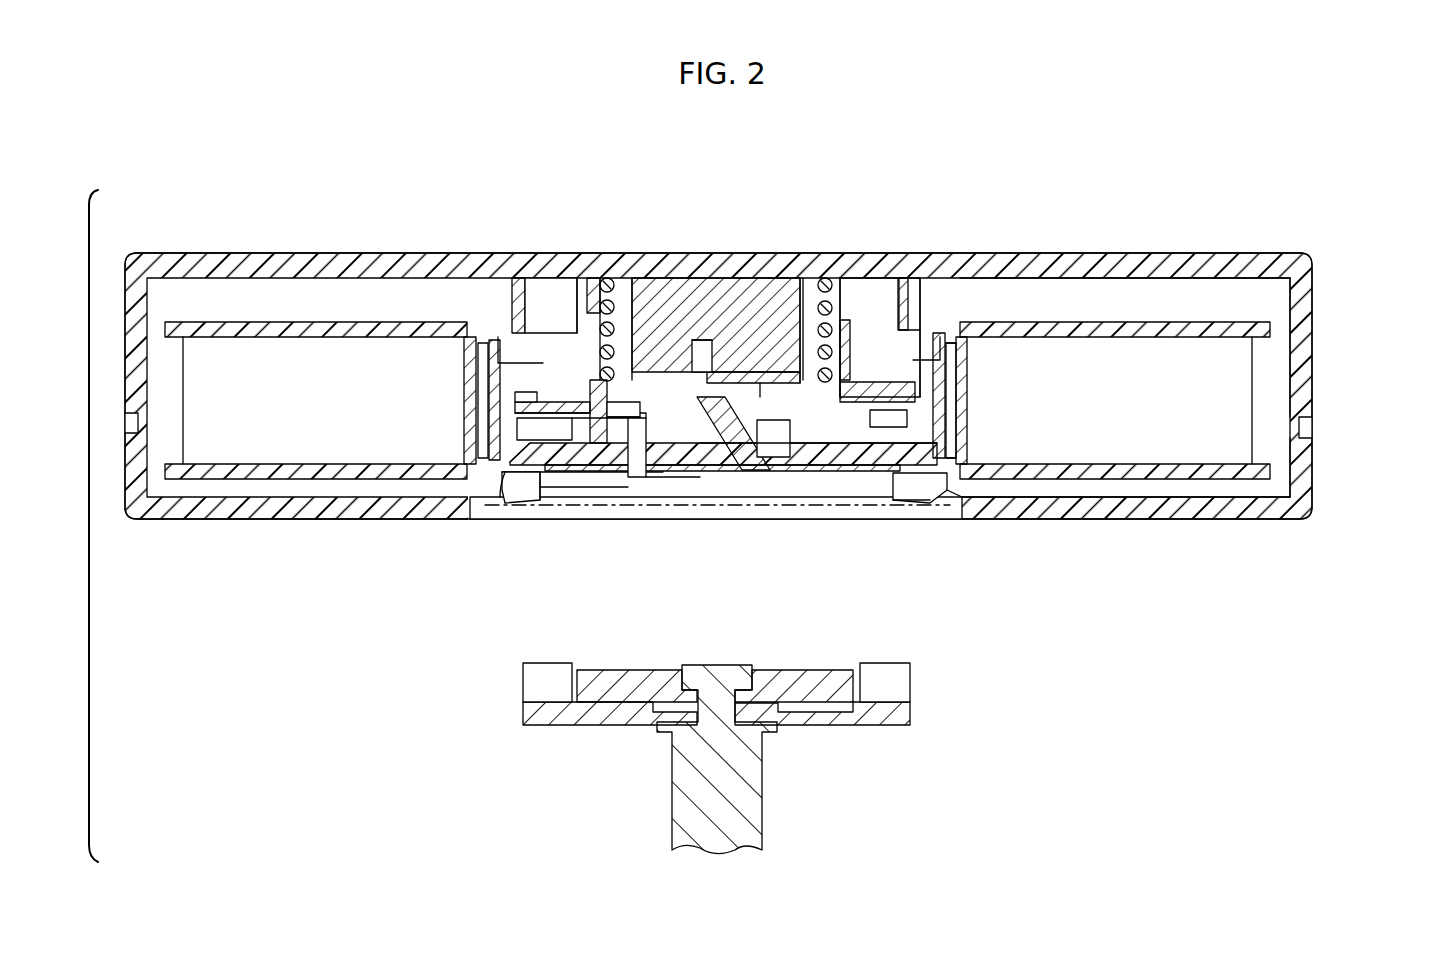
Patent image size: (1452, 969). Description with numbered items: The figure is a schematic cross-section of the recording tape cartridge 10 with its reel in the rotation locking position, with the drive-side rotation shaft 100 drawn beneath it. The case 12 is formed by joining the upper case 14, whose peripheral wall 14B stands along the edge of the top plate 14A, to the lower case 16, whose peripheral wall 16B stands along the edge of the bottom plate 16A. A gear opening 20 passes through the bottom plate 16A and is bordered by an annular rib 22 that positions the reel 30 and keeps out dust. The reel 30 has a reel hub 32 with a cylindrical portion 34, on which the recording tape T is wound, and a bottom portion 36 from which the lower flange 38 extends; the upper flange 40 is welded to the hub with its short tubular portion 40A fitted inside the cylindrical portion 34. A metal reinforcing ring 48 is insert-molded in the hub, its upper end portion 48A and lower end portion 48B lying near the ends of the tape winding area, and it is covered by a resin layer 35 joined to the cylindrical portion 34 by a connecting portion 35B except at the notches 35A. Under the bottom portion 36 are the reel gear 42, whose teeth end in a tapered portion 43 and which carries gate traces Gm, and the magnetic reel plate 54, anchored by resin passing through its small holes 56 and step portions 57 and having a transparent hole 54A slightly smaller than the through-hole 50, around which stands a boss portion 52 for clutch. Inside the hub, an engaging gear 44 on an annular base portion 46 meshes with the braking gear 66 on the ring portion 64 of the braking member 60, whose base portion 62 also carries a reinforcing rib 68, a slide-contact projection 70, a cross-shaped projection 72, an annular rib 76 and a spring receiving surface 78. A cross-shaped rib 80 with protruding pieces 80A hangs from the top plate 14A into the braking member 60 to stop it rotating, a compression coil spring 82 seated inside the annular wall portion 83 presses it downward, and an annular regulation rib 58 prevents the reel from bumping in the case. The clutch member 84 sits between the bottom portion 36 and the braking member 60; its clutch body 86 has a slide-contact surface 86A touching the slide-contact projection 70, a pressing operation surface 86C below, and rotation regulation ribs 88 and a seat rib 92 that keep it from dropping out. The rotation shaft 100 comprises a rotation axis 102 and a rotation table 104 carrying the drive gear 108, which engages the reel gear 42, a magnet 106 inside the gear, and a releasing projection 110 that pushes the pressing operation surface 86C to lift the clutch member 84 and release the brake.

The recording tape cartridge 10 is at (991, 133).
The case 12 is at (1392, 375).
The upper case 14 is at (1331, 373).
The top plate 14A is at (1125, 267).
The peripheral wall 14B is at (1310, 290).
The lower case 16 is at (1331, 489).
The bottom plate 16A is at (1172, 521).
The peripheral wall 16B is at (1312, 512).
The gear opening 20 is at (940, 500).
The annular rib 22 is at (980, 505).
The reel 30 is at (980, 300).
The reel hub 32 is at (1038, 378).
The cylindrical portion 34 is at (966, 402).
The resin layer 35 is at (1005, 300).
The notches 35A is at (481, 255).
The connecting portion 35B is at (968, 350).
The bottom portion 36 is at (966, 446).
The lower flange 38 is at (1130, 466).
The upper flange 40 is at (1143, 337).
The short tubular portion 40A is at (945, 300).
The reel gear 42 is at (518, 505).
The tapered portion 43 is at (962, 500).
The engaging gear 44 is at (560, 428).
The annular base portion 46 is at (571, 500).
The reinforcing ring 48 is at (438, 255).
The upper end portion 48A is at (485, 355).
The lower end portion 48B is at (470, 462).
The through-hole 50 is at (790, 500).
The boss portion for clutch 52 is at (630, 500).
The reel plate 54 is at (810, 500).
The transparent hole 54A is at (656, 500).
The small holes 56 is at (833, 505).
The step portion 57 is at (853, 505).
The regulation rib 58 is at (903, 300).
The braking member 60 is at (580, 255).
The base portion 62 is at (633, 255).
The ring portion 64 is at (532, 255).
The braking gear 66 is at (560, 420).
The reinforcing rib 68 is at (910, 373).
The slide-contact projection 70 is at (750, 255).
The cross-shaped projection 72 is at (823, 255).
The annular rib 76 is at (846, 366).
The spring receiving surface 78 is at (855, 255).
The cross-shaped rib 80 is at (715, 255).
The protruding piece 80A is at (794, 255).
The compression coil spring 82 is at (880, 255).
The annular wall portion 83 is at (600, 255).
The clutch member 84 is at (662, 500).
The clutch body 86 is at (778, 500).
The slide-contact surface 86A is at (697, 255).
The pressing operation surface 86C is at (688, 505).
The rotation regulation rib 88 is at (670, 255).
The seat rib 92 is at (778, 255).
The rotation shaft 100 is at (731, 739).
The rotation axis 102 is at (752, 835).
The rotation table 104 is at (845, 727).
The magnet 106 is at (626, 727).
The drive gear 108 is at (523, 690).
The releasing projection 110 is at (740, 739).
The recording tape T is at (308, 365).
The gate traces Gm is at (520, 493).